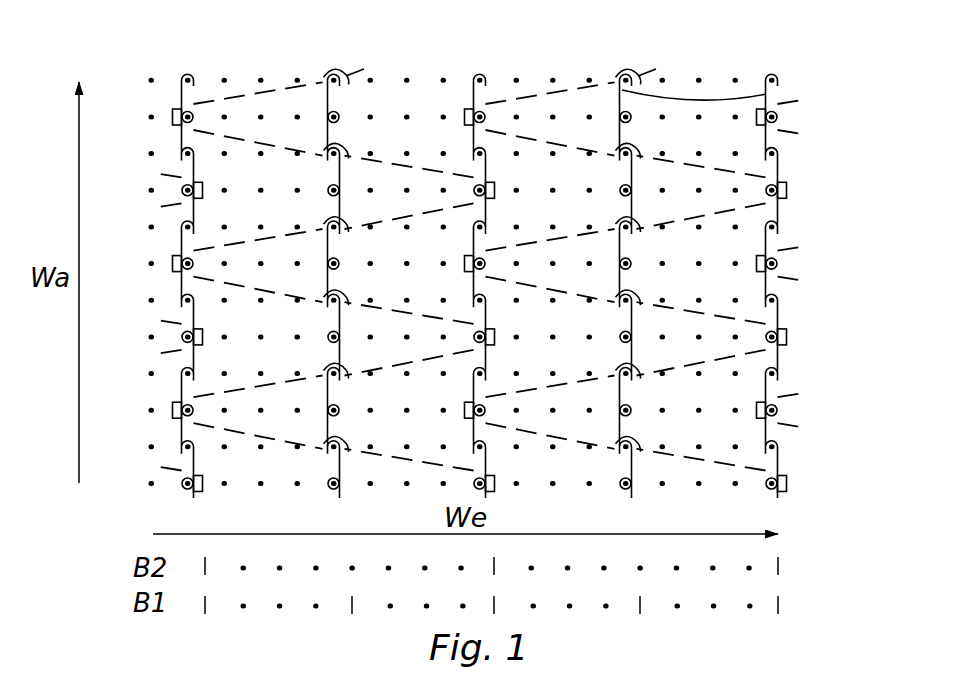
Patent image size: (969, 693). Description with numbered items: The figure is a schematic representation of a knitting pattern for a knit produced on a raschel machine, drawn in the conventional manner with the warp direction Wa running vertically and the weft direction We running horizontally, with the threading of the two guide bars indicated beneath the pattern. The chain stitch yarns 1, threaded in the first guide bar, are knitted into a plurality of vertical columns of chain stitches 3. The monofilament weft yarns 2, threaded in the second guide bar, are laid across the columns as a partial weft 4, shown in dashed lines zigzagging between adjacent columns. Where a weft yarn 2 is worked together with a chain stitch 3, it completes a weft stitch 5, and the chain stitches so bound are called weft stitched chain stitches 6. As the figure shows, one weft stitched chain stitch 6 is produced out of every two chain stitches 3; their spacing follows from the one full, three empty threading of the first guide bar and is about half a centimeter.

The chain stitch yarn 1 is at (694, 100).
The monofilament weft yarn 2 is at (253, 90).
The chain stitch 3 is at (179, 69).
The partial weft 4 is at (257, 240).
The weft stitch 5 is at (320, 214).
The weft stitched chain stitch 6 is at (320, 63).